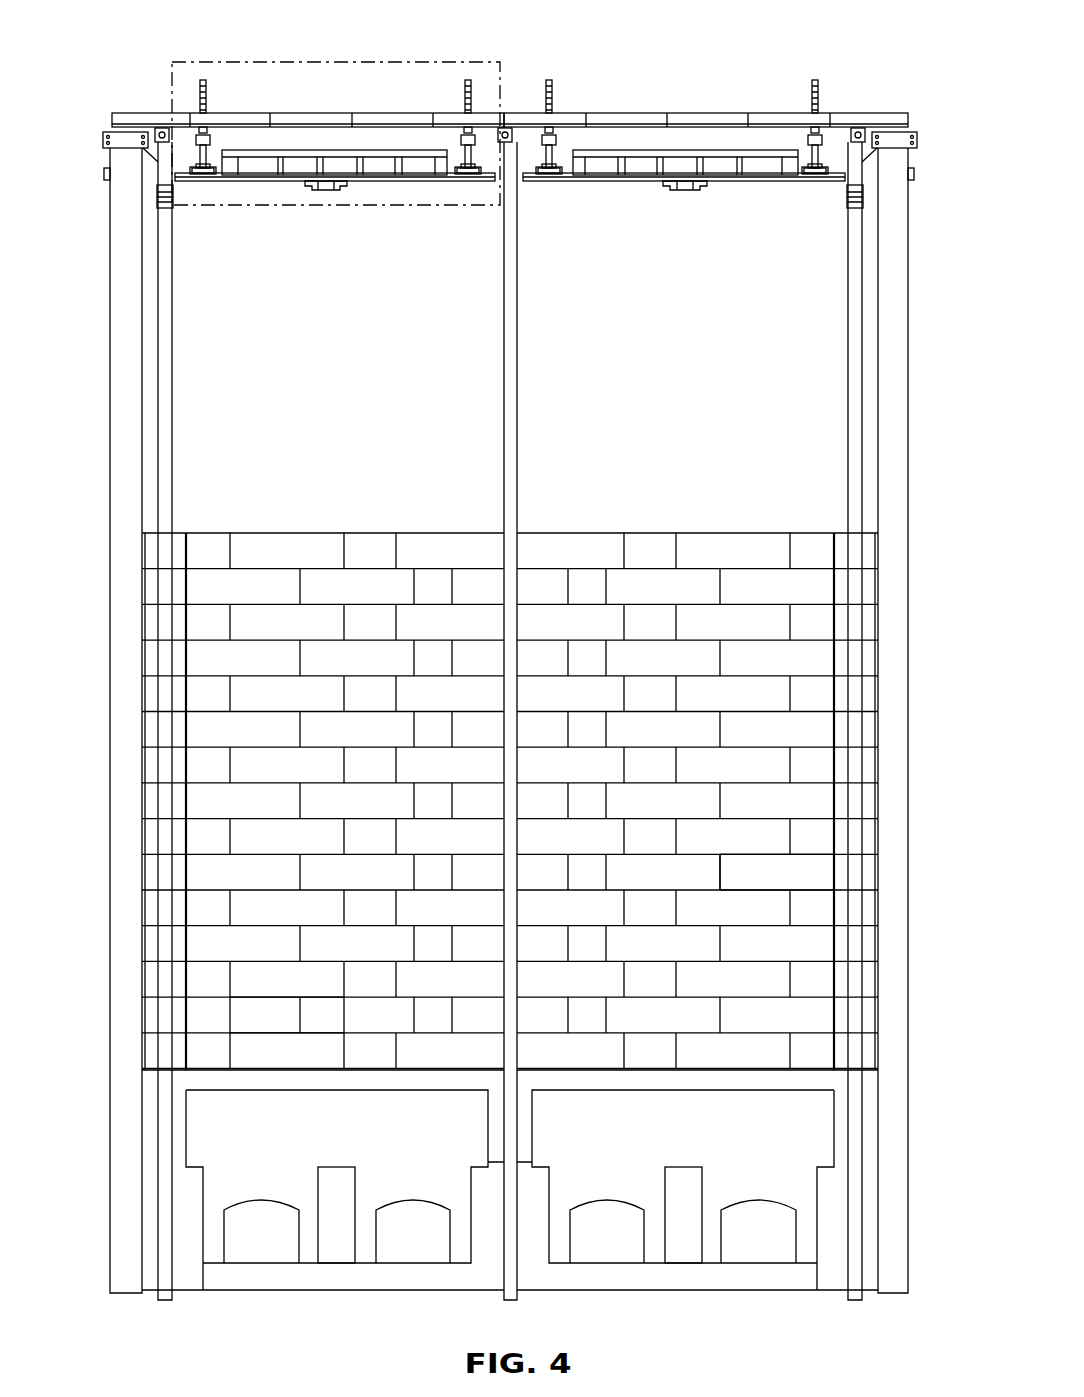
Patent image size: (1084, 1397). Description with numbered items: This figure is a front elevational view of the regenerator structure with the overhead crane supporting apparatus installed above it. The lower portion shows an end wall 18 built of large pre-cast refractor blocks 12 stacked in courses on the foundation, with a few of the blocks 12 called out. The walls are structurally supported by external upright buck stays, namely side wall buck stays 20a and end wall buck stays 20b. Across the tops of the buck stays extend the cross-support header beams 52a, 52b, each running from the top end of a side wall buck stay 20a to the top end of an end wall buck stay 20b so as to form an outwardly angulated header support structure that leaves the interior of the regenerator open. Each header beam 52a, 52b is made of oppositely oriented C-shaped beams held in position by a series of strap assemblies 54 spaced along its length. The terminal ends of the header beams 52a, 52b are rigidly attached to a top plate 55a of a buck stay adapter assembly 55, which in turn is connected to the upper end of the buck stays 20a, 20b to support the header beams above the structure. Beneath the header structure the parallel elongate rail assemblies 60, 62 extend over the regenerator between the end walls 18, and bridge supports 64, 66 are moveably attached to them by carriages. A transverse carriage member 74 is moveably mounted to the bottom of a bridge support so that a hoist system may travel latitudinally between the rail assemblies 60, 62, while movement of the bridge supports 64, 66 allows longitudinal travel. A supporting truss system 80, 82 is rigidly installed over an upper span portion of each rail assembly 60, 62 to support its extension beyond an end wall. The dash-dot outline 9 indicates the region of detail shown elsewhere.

The detail area 9 is at (283, 207).
The pre-cast refractor blocks 12 is at (787, 945).
The end wall 18 is at (346, 740).
The side wall buck stay 20a is at (123, 450).
The end wall buck stay 20b is at (162, 376).
The cross-support header beam 52a is at (628, 112).
The cross-support header beam 52b is at (395, 112).
The strap assemblies 54 is at (352, 113).
The buck stay adapter assembly 55 is at (103, 153).
The top plate 55a is at (125, 113).
The rail assembly 60 is at (548, 178).
The rail assembly 62 is at (212, 176).
The bridge support 64 is at (735, 181).
The bridge support 66 is at (370, 181).
The transverse carriage member 74 is at (690, 190).
The supporting truss system 80 is at (552, 96).
The supporting truss system 82 is at (207, 100).